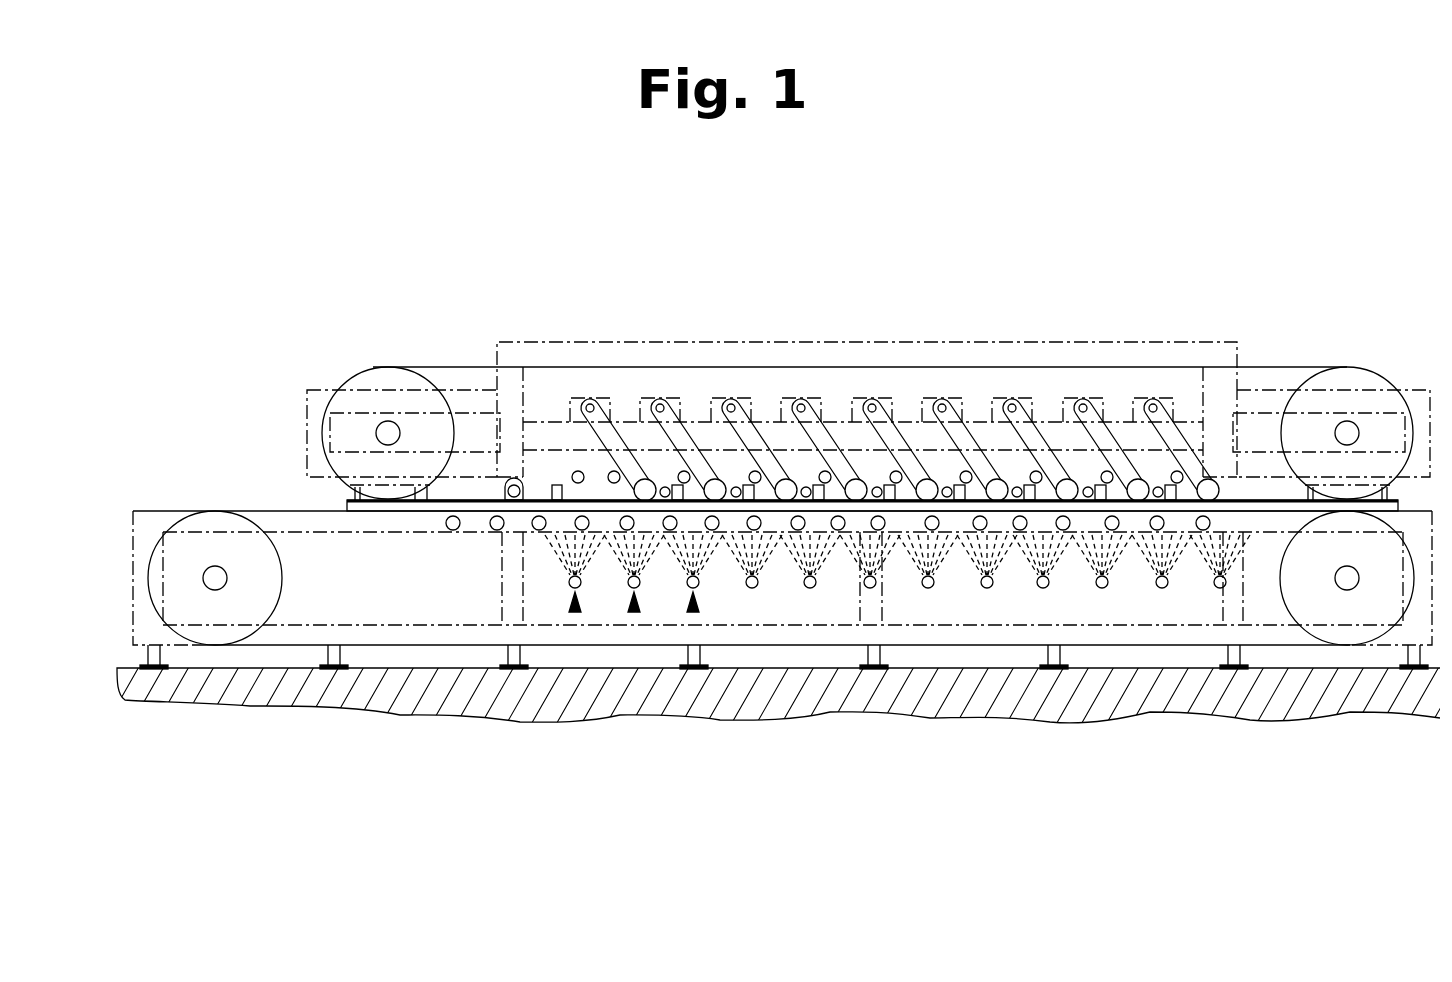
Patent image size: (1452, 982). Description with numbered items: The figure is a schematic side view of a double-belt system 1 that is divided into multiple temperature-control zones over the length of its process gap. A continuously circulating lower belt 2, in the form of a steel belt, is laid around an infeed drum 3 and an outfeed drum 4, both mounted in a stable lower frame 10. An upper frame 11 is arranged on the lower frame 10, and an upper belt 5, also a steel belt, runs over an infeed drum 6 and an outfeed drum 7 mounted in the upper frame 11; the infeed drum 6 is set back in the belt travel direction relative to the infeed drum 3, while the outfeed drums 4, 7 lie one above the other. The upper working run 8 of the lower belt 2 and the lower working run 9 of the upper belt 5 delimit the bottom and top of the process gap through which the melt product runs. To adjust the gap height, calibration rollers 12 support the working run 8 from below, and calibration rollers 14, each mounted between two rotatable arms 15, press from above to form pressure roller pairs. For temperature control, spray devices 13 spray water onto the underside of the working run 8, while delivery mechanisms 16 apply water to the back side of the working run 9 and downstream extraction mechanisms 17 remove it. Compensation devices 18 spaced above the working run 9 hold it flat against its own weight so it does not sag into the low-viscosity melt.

The double-belt system 1 is at (781, 300).
The lower belt 2 is at (277, 637).
The infeed drum 3 is at (185, 636).
The outfeed drum 4 is at (1360, 636).
The upper belt 5 is at (460, 368).
The infeed drum 6 is at (362, 375).
The outfeed drum 7 is at (1383, 377).
The upper working run 8 is at (283, 508).
The lower working run 9 is at (455, 492).
The lower frame 10 is at (727, 624).
The upper frame 11 is at (660, 343).
The calibration rollers 12 is at (497, 530).
The spray devices 13 is at (693, 612).
The calibration rollers 14 is at (733, 490).
The arms 15 is at (675, 433).
The delivery mechanism 16 is at (828, 470).
The extraction mechanism 17 is at (877, 490).
The compensation devices 18 is at (548, 487).